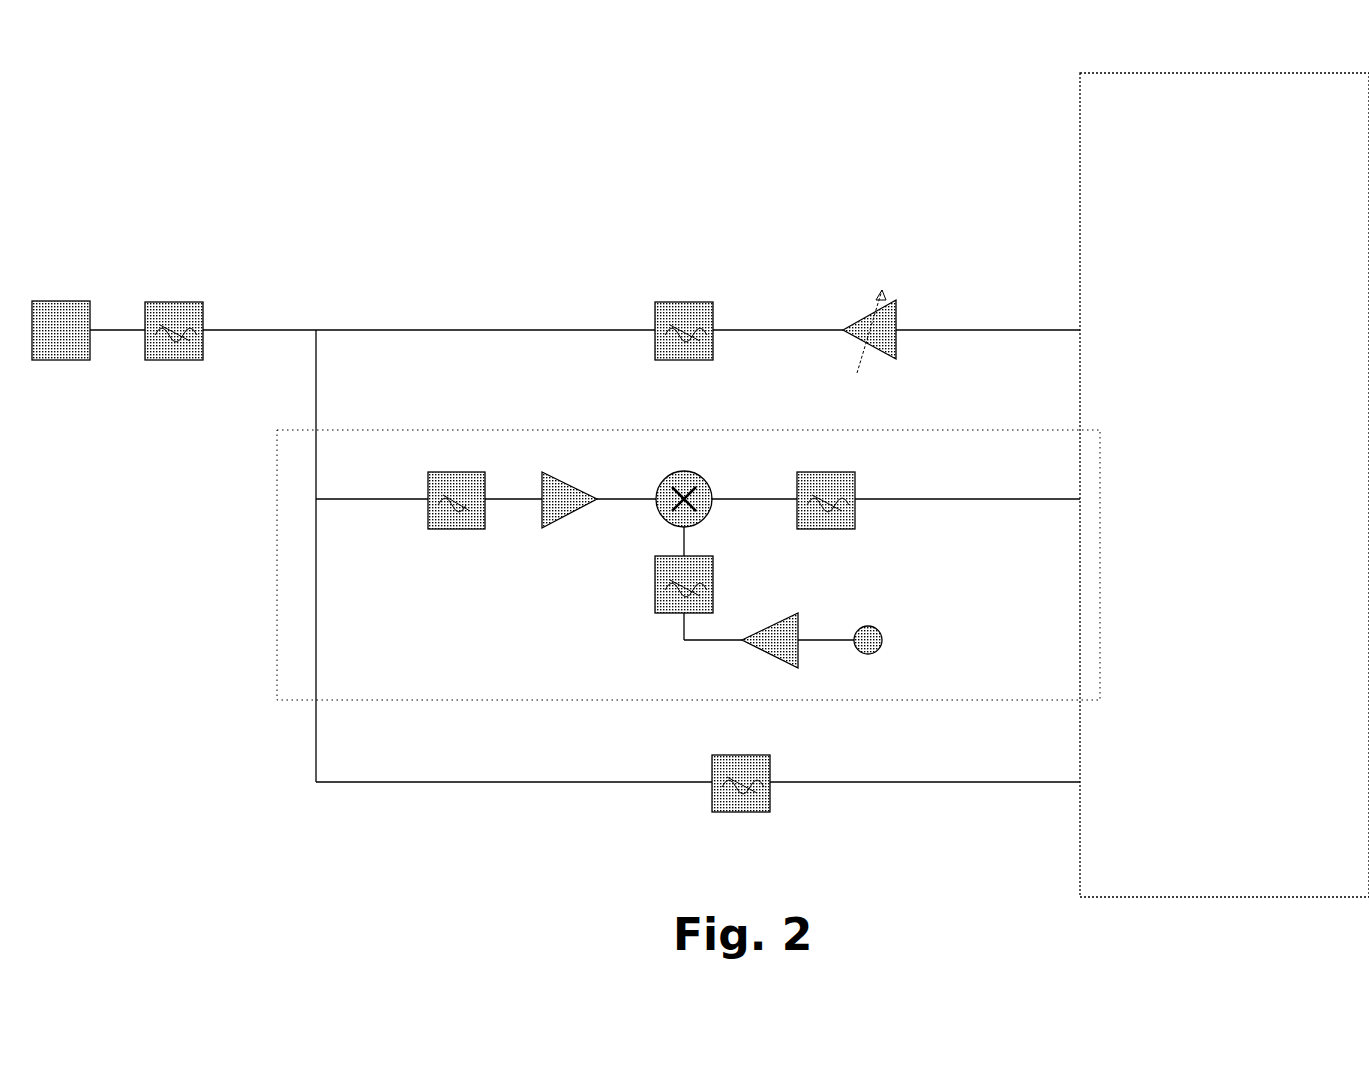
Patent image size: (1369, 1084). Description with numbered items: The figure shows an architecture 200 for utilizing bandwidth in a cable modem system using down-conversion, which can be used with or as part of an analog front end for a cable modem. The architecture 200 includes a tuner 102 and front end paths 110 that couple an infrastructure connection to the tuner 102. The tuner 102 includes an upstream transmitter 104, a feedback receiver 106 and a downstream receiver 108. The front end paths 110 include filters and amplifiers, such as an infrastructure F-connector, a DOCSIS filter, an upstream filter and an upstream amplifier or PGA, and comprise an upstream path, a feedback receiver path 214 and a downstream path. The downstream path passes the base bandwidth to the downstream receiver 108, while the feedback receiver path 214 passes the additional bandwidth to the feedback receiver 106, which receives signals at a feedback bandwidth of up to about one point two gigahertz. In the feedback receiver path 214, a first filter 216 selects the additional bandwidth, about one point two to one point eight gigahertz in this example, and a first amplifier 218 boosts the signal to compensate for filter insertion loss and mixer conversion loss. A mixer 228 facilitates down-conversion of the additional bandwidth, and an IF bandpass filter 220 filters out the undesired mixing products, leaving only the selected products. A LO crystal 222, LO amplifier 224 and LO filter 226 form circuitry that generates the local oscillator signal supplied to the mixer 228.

The tuner 102 is at (1080, 134).
The upstream transmitter 104 is at (1202, 285).
The feedback receiver 106 is at (1185, 455).
The downstream receiver 108 is at (1158, 740).
The front end paths 110 is at (176, 637).
The architecture 200 is at (463, 891).
The feedback receiver path 214 is at (716, 430).
The first filter 216 is at (441, 530).
The first amplifier 218 is at (556, 529).
The IF bandpass filter 220 is at (818, 530).
The LO crystal 222 is at (869, 654).
The LO amplifier 224 is at (775, 655).
The LO filter 226 is at (665, 613).
The mixer 228 is at (670, 478).